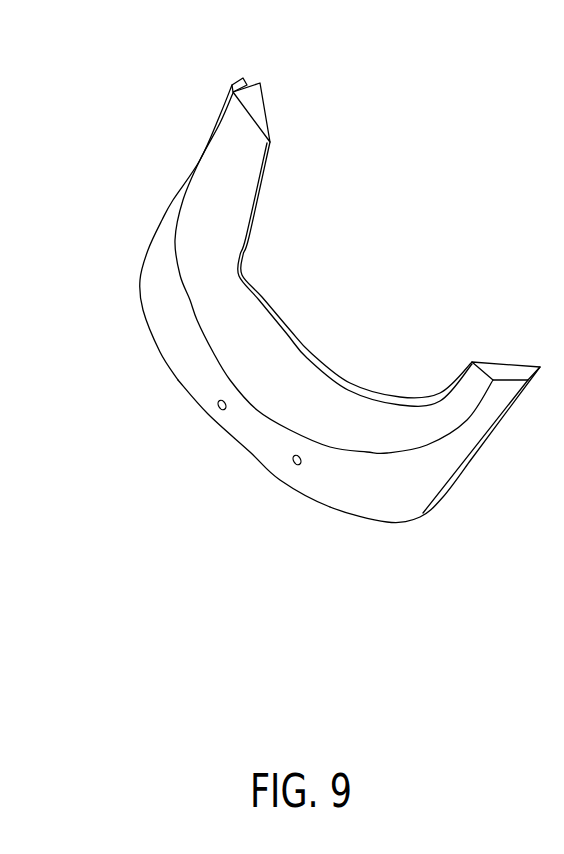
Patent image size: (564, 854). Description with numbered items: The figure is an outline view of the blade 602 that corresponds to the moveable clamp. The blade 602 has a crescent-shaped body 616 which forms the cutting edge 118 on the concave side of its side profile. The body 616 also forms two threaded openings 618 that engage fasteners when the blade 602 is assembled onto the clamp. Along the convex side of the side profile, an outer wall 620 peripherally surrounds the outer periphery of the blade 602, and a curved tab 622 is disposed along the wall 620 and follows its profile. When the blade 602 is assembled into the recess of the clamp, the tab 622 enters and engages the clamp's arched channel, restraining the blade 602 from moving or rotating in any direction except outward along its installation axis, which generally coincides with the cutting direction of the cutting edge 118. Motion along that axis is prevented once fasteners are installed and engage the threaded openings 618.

The blade 602 is at (155, 285).
The curved tab 622 is at (215, 113).
The outer wall 620 is at (197, 168).
The cutting edge 118 is at (315, 357).
The crescent-shaped body 616 is at (395, 507).
The threaded openings 618 is at (215, 407).